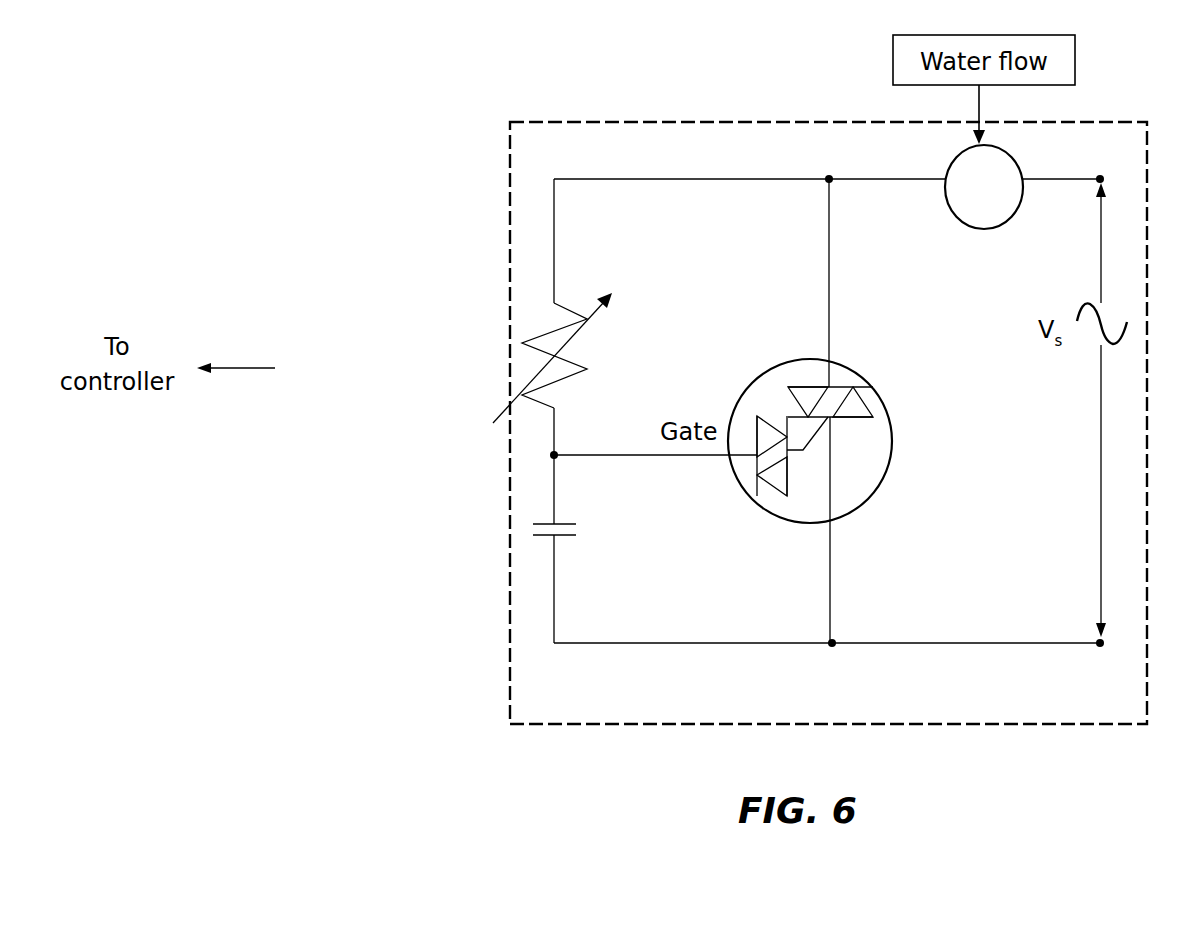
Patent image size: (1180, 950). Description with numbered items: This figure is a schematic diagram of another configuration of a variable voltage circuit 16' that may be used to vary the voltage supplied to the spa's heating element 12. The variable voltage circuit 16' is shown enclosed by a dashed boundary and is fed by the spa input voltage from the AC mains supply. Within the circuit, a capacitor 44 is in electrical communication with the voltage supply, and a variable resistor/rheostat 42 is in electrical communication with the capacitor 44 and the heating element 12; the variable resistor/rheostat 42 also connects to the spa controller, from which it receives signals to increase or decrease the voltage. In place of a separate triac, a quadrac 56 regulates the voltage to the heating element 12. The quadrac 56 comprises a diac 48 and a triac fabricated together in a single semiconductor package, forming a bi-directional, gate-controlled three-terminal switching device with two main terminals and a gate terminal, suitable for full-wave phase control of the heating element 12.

The heating element 12 is at (984, 187).
The variable voltage circuit 16' is at (828, 423).
The variable resistor/rheostat 42 is at (443, 374).
The capacitor 44 is at (469, 549).
The diac 48 is at (731, 498).
The quadrac 56 is at (868, 411).